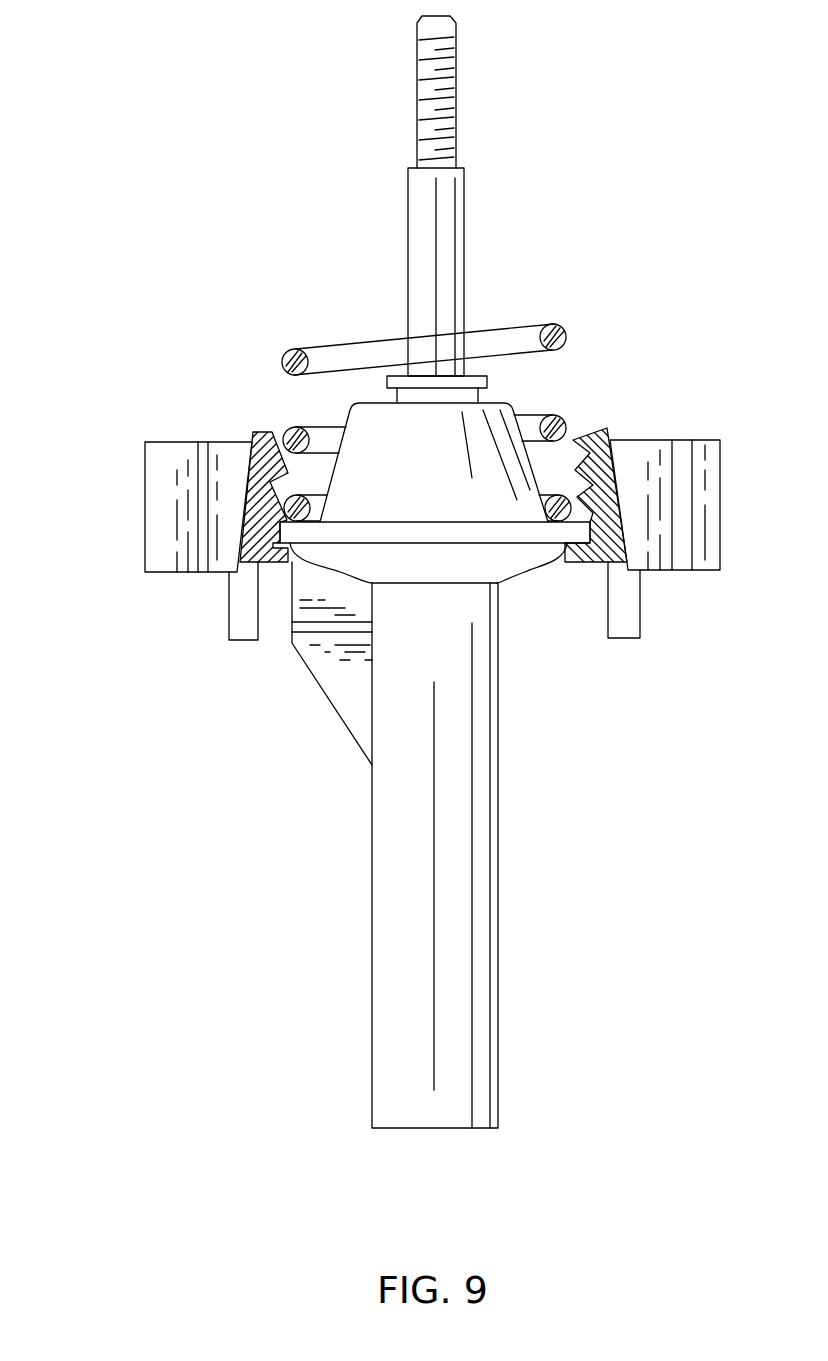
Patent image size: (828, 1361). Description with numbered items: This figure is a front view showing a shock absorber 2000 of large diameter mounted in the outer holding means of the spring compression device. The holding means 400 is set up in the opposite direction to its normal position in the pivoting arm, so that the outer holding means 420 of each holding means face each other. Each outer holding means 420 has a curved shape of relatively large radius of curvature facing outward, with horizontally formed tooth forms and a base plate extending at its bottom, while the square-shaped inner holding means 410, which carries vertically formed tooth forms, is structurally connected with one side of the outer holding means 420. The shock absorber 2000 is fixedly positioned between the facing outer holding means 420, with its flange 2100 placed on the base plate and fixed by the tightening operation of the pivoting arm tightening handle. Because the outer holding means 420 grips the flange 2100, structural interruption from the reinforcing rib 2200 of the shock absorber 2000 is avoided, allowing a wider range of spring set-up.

The holding means 400 is at (386, 466).
The inner holding means 410 is at (155, 500).
The outer holding means 420 is at (262, 432).
The shock absorber 2000 is at (363, 950).
The flange 2100 is at (453, 545).
The reinforcing rib 2200 is at (333, 685).